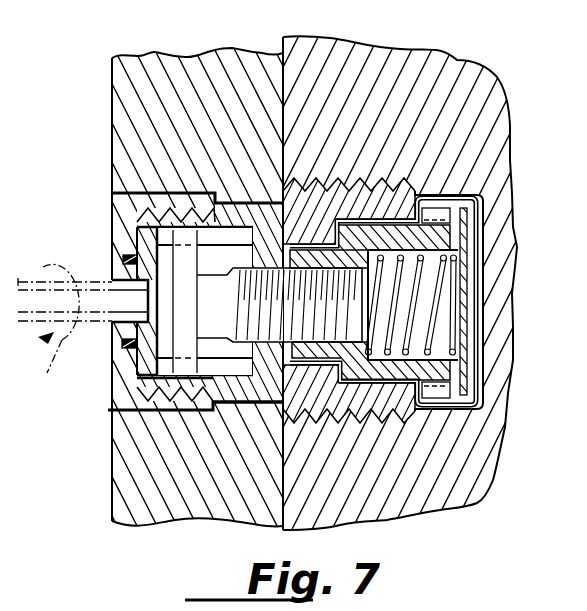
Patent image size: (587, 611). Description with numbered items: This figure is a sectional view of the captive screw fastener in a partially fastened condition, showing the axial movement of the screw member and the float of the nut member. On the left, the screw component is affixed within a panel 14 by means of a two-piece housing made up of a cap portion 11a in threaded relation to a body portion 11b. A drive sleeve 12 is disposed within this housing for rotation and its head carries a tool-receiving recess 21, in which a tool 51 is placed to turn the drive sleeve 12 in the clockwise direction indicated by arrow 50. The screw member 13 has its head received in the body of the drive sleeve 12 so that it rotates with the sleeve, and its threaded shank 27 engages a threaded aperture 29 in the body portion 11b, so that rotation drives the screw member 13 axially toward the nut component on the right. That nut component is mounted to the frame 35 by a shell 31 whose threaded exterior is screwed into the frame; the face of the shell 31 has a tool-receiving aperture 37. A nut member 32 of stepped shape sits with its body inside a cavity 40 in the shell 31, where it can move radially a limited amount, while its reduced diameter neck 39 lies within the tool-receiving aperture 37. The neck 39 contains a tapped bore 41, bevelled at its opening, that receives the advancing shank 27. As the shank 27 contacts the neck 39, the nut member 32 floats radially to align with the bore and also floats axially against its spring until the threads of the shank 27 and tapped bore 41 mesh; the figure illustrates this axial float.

The cap portion 11a is at (113, 207).
The body portion 11b is at (221, 412).
The drive sleeve 12 is at (140, 248).
The screw member 13 is at (217, 318).
The panel 14 is at (195, 75).
The tool-receiving recess 21 is at (128, 318).
The threaded shank 27 is at (268, 235).
The threaded aperture 29 is at (258, 405).
The shell 31 is at (398, 202).
The nut member 32 is at (392, 423).
The frame 35 is at (410, 77).
The tool-receiving aperture 37 is at (322, 241).
The reduced diameter neck 39 is at (313, 240).
The cavity 40 is at (343, 388).
The tapped bore 41 is at (343, 317).
The arrow 50 is at (57, 360).
The tool 51 is at (23, 302).